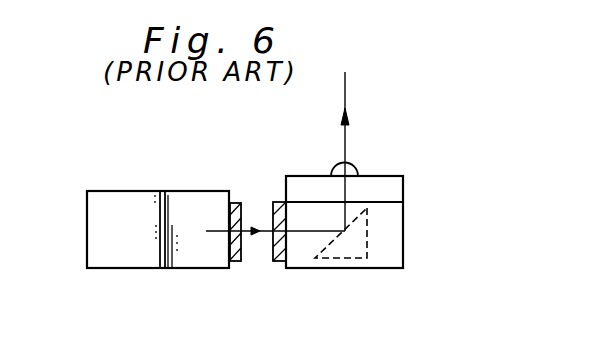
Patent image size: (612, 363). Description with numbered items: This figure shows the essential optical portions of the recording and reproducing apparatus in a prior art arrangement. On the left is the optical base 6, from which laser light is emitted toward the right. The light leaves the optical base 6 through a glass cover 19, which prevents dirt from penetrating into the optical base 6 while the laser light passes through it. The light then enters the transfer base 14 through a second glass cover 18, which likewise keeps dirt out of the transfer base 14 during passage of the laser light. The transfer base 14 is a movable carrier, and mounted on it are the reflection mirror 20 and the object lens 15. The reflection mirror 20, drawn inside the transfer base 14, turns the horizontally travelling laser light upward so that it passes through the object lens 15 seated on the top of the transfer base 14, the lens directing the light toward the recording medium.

The optical base 6 is at (139, 247).
The glass cover 19 is at (235, 265).
The glass cover 18 is at (280, 265).
The transfer base 14 is at (407, 185).
The object lens 15 is at (358, 168).
The reflection mirror 20 is at (370, 250).